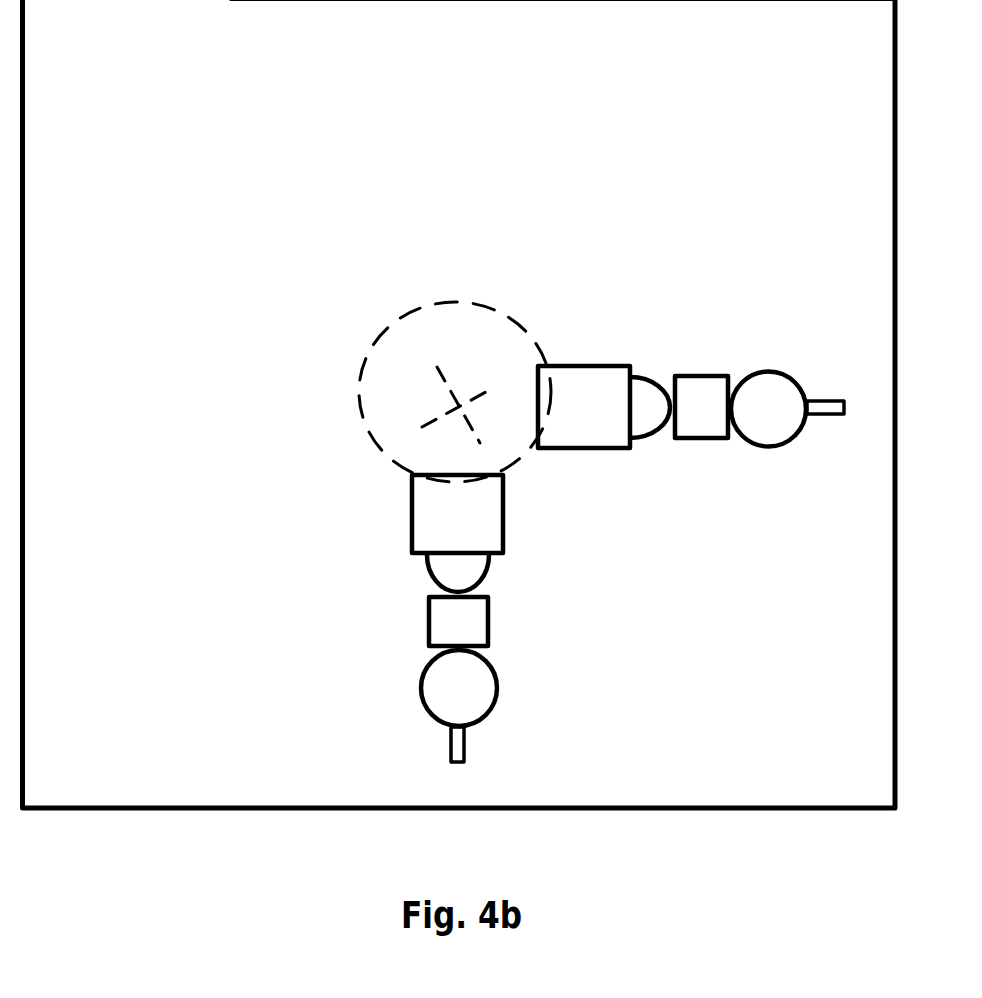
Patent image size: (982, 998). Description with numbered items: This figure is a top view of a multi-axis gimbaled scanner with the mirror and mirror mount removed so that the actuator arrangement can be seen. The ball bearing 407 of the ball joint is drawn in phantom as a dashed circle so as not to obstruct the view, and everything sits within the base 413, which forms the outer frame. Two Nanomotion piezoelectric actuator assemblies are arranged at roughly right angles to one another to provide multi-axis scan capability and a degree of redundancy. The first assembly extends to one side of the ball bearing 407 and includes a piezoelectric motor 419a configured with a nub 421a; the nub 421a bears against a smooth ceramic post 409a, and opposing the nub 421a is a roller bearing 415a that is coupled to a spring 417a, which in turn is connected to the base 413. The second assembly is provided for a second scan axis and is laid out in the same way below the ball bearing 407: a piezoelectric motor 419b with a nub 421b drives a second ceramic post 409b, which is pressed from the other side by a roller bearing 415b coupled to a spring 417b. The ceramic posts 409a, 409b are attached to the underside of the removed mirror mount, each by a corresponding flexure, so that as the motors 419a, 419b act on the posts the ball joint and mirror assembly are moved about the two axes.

The base 413 is at (172, 92).
The ball bearing 407 is at (425, 306).
The piezoelectric motor 419a is at (583, 453).
The nub 421a is at (649, 441).
The ceramic post 409a is at (700, 372).
The roller bearing 415a is at (766, 363).
The spring 417a is at (845, 417).
The piezoelectric motor 419b is at (409, 518).
The nub 421b is at (427, 575).
The ceramic post 409b is at (424, 624).
The roller bearing 415b is at (501, 705).
The spring 417b is at (471, 752).